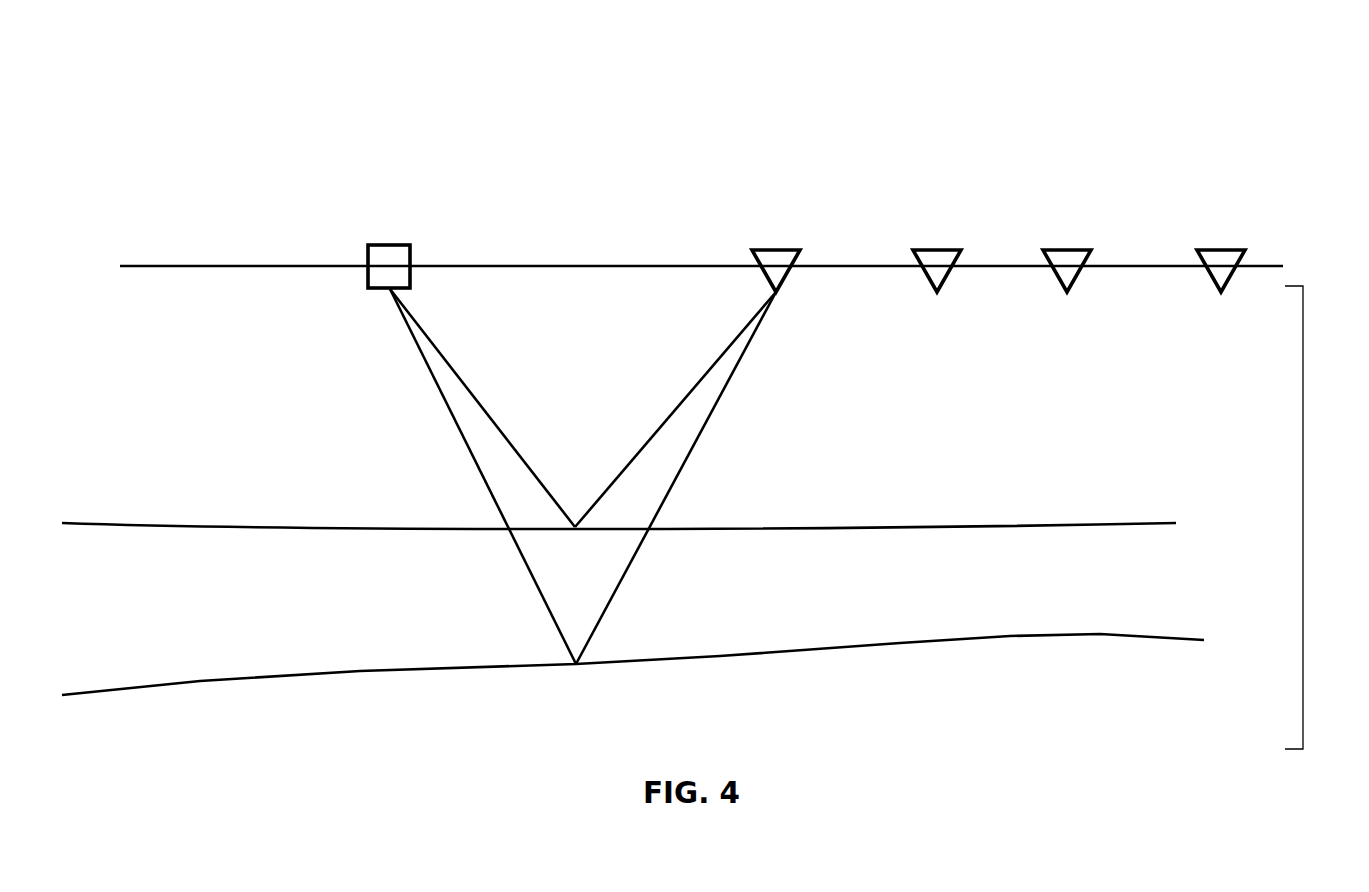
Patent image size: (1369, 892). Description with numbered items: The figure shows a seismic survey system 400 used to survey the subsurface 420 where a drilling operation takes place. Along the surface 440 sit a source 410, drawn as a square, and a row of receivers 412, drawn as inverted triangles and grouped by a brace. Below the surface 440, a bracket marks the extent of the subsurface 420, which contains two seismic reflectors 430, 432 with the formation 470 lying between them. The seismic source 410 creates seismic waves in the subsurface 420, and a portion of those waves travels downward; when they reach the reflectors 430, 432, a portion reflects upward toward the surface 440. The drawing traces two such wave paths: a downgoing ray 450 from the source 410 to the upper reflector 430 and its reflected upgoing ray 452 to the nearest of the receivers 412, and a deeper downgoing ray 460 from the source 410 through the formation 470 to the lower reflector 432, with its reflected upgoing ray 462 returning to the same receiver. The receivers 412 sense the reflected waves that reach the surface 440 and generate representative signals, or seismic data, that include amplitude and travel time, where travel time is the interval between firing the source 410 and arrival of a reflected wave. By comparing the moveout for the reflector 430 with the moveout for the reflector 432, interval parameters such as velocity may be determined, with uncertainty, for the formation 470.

The seismic survey system 400 is at (162, 123).
The source 410 is at (388, 245).
The receivers 412 is at (1261, 237).
The subsurface 420 is at (1303, 496).
The reflector 430 is at (1008, 523).
The reflector 432 is at (1008, 636).
The surface 440 is at (263, 266).
The downgoing ray to first reflector 450 is at (457, 370).
The upgoing reflected ray from first reflector 452 is at (662, 427).
The downgoing ray to second reflector 460 is at (522, 568).
The upgoing reflected ray from second reflector 462 is at (630, 567).
The formation 470 is at (885, 594).